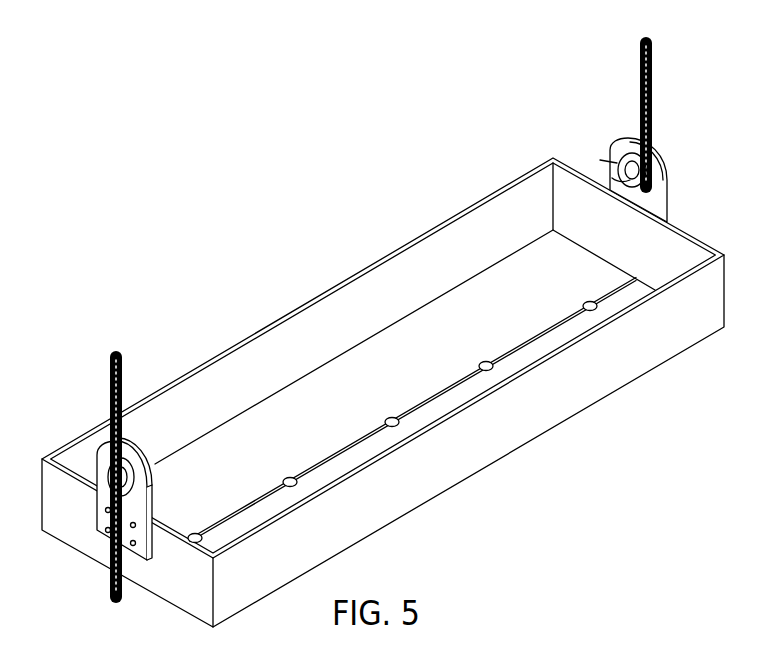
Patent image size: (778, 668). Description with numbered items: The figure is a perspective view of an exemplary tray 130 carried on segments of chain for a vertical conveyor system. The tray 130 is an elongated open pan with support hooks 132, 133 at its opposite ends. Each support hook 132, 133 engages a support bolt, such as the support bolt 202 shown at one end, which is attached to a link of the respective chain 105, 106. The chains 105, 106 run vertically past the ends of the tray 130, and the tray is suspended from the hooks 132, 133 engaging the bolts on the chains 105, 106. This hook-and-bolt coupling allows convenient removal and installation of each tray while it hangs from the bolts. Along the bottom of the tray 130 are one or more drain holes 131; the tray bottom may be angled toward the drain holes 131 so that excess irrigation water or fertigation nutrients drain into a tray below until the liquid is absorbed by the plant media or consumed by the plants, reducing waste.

The chain 105 is at (111, 398).
The chain 106 is at (643, 77).
The tray 130 is at (343, 280).
The drain hole 131 is at (487, 363).
The support hook 132 is at (657, 200).
The support hook 133 is at (153, 498).
The support bolt 202 is at (630, 165).